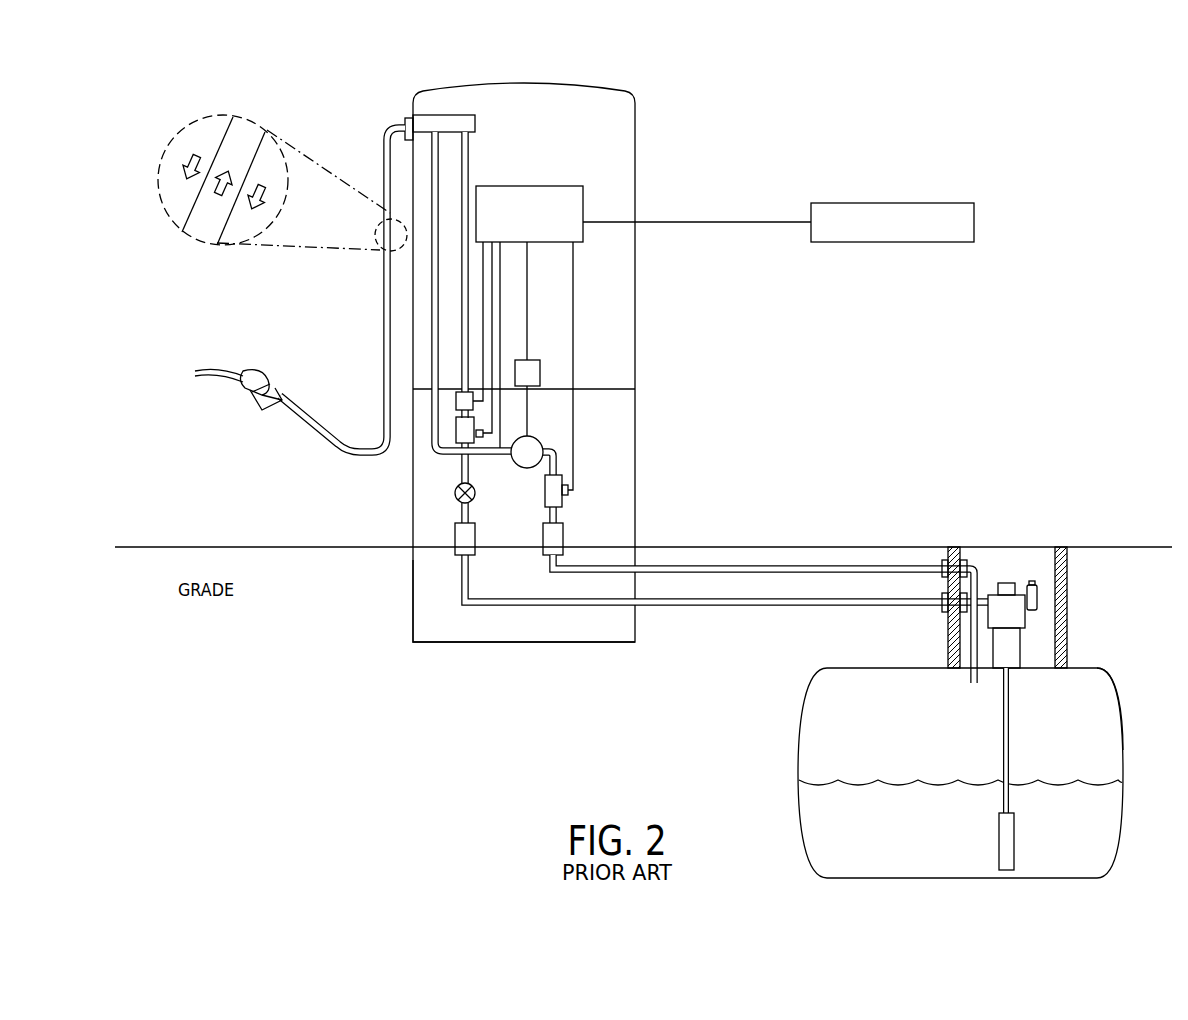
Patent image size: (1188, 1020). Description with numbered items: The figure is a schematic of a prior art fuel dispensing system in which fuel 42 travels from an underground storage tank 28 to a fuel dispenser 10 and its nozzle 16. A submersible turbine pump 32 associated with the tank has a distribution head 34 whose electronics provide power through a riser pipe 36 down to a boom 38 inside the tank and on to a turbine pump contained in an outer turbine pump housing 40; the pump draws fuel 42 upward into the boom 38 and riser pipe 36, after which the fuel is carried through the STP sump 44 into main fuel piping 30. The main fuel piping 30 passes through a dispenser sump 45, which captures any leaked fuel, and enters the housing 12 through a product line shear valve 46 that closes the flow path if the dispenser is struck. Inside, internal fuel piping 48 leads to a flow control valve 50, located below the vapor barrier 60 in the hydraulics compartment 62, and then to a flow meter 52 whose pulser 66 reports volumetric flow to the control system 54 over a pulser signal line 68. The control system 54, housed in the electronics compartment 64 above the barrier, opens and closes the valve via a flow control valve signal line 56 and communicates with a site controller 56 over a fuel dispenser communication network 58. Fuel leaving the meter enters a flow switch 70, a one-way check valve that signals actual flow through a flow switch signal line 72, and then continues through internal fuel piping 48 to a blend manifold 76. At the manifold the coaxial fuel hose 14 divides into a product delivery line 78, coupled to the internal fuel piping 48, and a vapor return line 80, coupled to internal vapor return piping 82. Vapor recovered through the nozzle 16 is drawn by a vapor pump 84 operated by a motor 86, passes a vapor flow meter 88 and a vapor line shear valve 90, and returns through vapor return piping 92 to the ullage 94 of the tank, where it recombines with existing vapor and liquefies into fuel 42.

The fuel dispenser 10 is at (736, 98).
The housing 12 is at (637, 158).
The fuel hose 14 is at (397, 132).
The nozzle 16 is at (251, 355).
The underground storage tank 28 is at (1096, 668).
The main fuel piping 30 is at (752, 607).
The submersible turbine pump 32 is at (1023, 565).
The distribution head 34 is at (1012, 620).
The riser pipe 36 is at (1012, 648).
The boom 38 is at (1008, 728).
The outer turbine pump housing 40 is at (1010, 840).
The fuel 42 is at (1112, 806).
The STP sump 44 is at (1062, 582).
The dispenser sump 45 is at (413, 590).
The product line shear valve 46 is at (457, 537).
The internal fuel piping 48 is at (462, 297).
The flow control valve 50 is at (455, 492).
The flow meter 52 is at (462, 435).
The control system 54 is at (526, 186).
The site controller 56 is at (936, 203).
The fuel dispenser communication network 58 is at (740, 222).
The vapor barrier 60 is at (605, 388).
The hydraulics compartment 62 is at (622, 420).
The electronics compartment 64 is at (622, 357).
The pulser 66 is at (480, 437).
The pulser signal line 68 is at (492, 327).
The flow switch 70 is at (462, 401).
The flow switch signal line 72 is at (500, 330).
The blend manifold 76 is at (450, 122).
The product delivery line 78 is at (208, 128).
The vapor return line 80 is at (245, 127).
The internal vapor return piping 82 is at (436, 292).
The vapor pump 84 is at (543, 450).
The motor 86 is at (540, 361).
The vapor flow meter 88 is at (564, 502).
The vapor line shear valve 90 is at (553, 537).
The vapor return piping 92 is at (797, 573).
The ullage 94 is at (1112, 736).